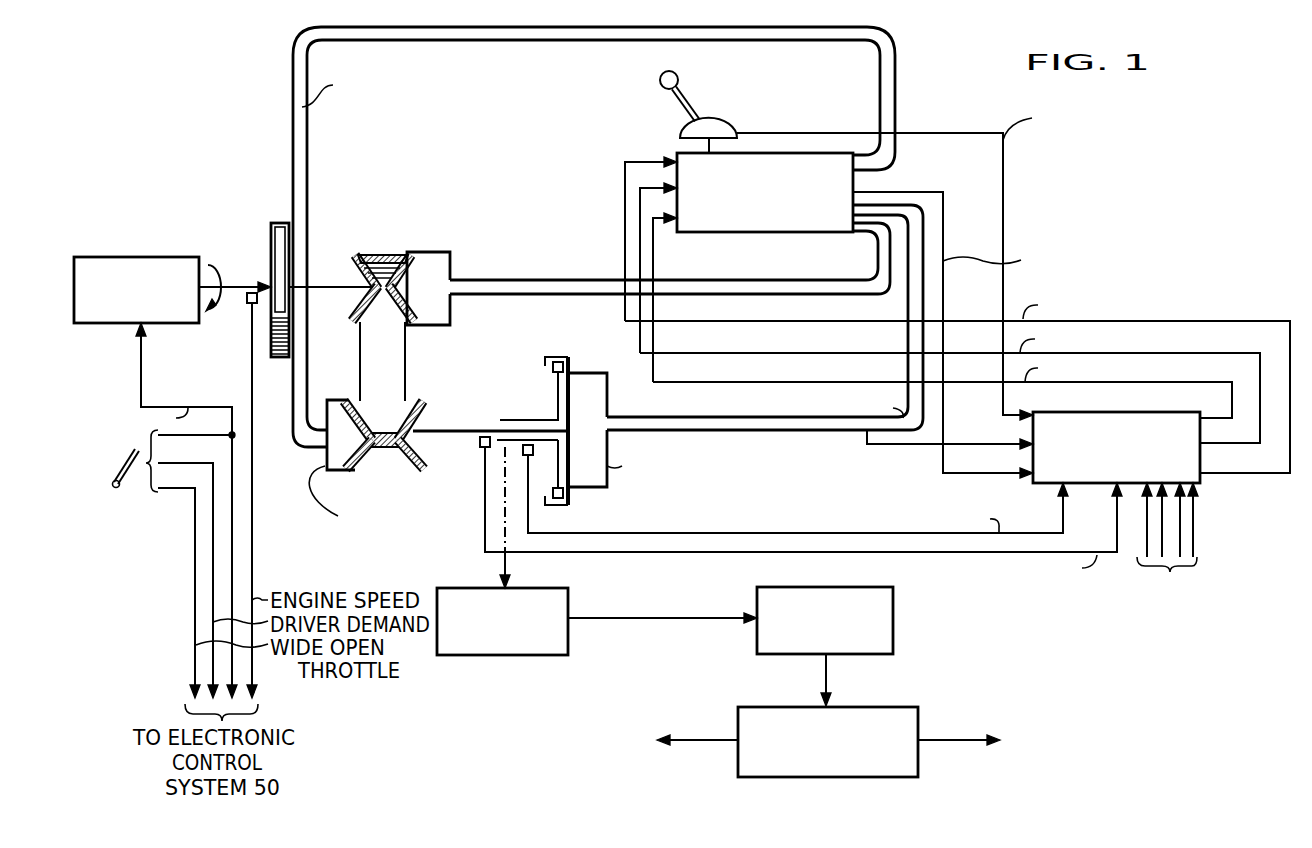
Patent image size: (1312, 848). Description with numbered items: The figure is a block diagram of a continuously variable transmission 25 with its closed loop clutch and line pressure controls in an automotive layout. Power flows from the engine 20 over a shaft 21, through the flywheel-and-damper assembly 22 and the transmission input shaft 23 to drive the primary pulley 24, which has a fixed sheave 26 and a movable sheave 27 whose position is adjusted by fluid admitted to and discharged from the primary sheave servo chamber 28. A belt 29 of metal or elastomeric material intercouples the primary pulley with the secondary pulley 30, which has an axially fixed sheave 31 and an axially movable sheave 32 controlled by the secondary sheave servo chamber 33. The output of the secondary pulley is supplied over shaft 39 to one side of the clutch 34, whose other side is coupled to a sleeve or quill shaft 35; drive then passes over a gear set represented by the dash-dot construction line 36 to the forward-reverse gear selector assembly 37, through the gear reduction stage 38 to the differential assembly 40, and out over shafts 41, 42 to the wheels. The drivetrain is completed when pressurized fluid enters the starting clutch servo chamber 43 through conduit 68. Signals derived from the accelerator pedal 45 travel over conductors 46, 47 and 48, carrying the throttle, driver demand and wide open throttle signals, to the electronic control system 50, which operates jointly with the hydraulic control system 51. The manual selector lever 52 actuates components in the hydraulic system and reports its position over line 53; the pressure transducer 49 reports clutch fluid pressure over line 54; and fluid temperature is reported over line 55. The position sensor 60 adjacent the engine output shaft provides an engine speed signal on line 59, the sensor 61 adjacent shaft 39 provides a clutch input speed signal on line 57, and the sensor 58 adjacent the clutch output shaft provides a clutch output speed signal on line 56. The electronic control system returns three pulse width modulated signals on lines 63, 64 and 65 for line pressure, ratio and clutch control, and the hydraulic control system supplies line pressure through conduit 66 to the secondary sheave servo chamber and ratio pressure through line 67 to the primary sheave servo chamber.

The engine 20 is at (126, 257).
The shaft 21 is at (246, 277).
The flywheel-and-damper assembly 22 is at (271, 240).
The transmission input shaft 23 is at (322, 288).
The primary pulley 24 is at (399, 325).
The continuously variable transmission 25 is at (453, 376).
The fixed sheave 26 is at (346, 258).
The movable sheave 27 is at (420, 318).
The primary sheave servo chamber 28 is at (440, 272).
The belt 29 is at (358, 348).
The secondary pulley 30 is at (396, 440).
The axially fixed sheave 31 is at (438, 442).
The axially movable sheave 32 is at (340, 402).
The secondary sheave servo chamber 33 is at (357, 488).
The clutch 34 is at (572, 350).
The sleeve or quill shaft 35 is at (541, 419).
The dash-dot construction line 36 is at (505, 517).
The forward-reverse gear selector assembly 37 is at (545, 588).
The gear reduction stage 38 is at (893, 620).
The shaft 39 is at (470, 430).
The differential assembly 40 is at (738, 767).
The shaft 41 is at (934, 740).
The shaft 42 is at (723, 740).
The starting clutch servo chamber 43 is at (689, 440).
The accelerator pedal 45 is at (128, 455).
The electrical conductor 46 is at (143, 378).
The electrical conductor 47 is at (204, 463).
The electrical conductor 48 is at (195, 488).
The pressure transducer 49 is at (866, 432).
The electronic control system 50 is at (1132, 405).
The hydraulic control system 51 is at (764, 238).
The manual selector lever 52 is at (688, 92).
The line 53 is at (1005, 236).
The line 54 is at (975, 444).
The line 55 is at (943, 210).
The conductor 56 is at (659, 533).
The conductor 57 is at (792, 555).
The sensor 58 is at (534, 448).
The conductor 59 is at (250, 378).
The position sensor 60 is at (247, 299).
The sensor 61 is at (480, 444).
The line 63 is at (1260, 390).
The line 64 is at (1232, 420).
The line 65 is at (1290, 392).
The conduit 66 is at (588, 35).
The line 67 is at (878, 253).
The conduit 68 is at (664, 419).